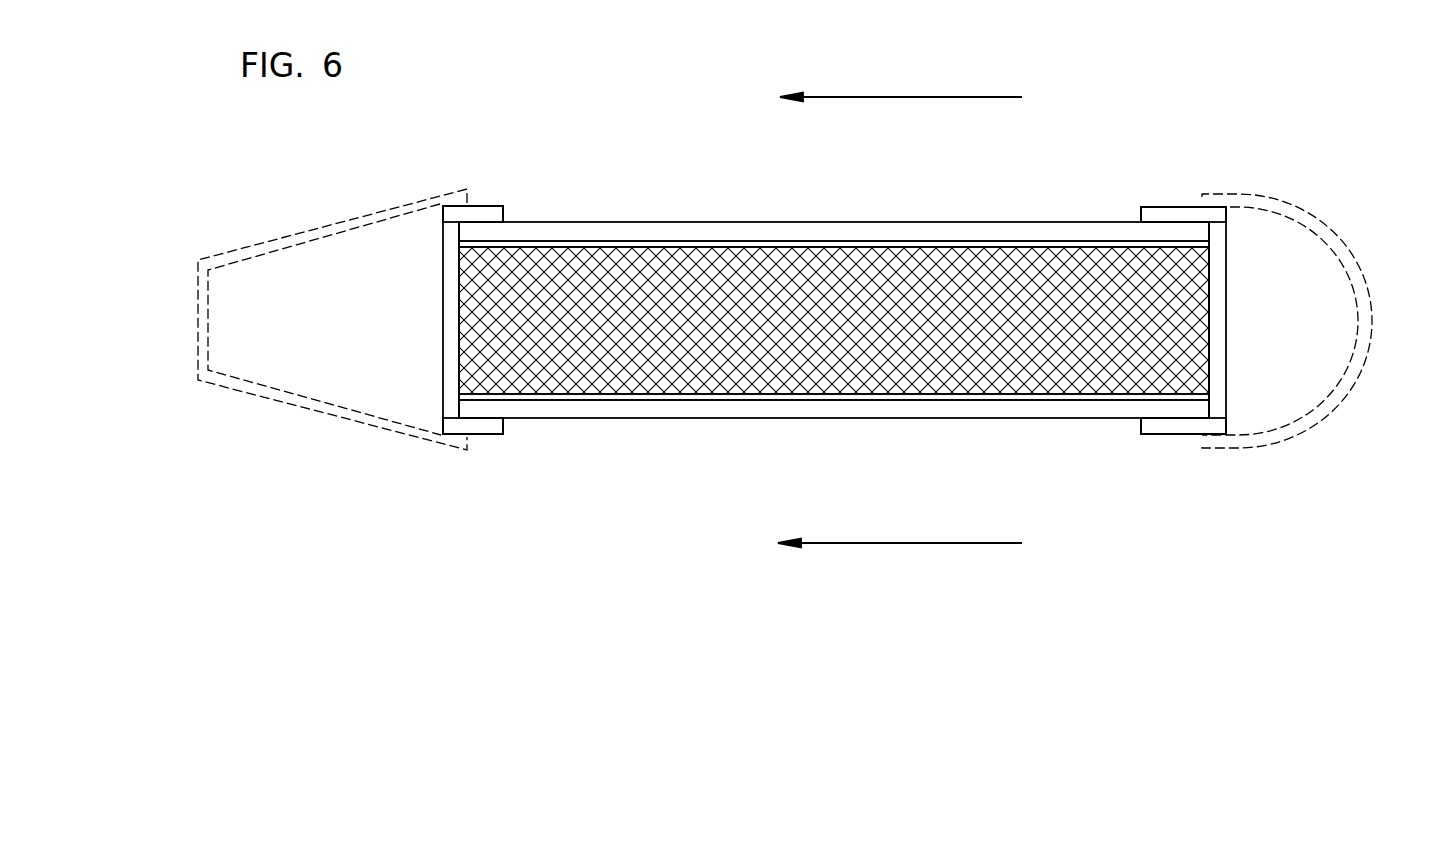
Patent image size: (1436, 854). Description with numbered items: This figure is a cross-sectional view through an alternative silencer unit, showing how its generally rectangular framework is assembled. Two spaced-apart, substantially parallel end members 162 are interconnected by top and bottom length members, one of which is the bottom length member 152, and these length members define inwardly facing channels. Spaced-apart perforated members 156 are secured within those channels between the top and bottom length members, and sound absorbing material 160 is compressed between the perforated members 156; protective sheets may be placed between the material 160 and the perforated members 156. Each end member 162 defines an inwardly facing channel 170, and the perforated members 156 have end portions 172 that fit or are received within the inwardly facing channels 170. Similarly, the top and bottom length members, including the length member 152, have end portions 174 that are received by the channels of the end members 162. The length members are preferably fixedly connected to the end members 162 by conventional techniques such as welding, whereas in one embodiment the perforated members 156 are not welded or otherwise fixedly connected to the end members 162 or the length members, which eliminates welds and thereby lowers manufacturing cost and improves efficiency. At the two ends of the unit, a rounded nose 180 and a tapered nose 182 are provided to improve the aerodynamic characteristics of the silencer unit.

The bottom length member 152 is at (614, 210).
The perforated member 156 is at (668, 240).
The sound absorbing material 160 is at (945, 328).
The end member 162 is at (443, 320).
The inwardly facing channel 170 is at (463, 342).
The end portion of perforated member 172 is at (527, 250).
The end portion of length member 174 is at (483, 233).
The rounded nose 180 is at (1347, 397).
The tapered nose 182 is at (252, 394).